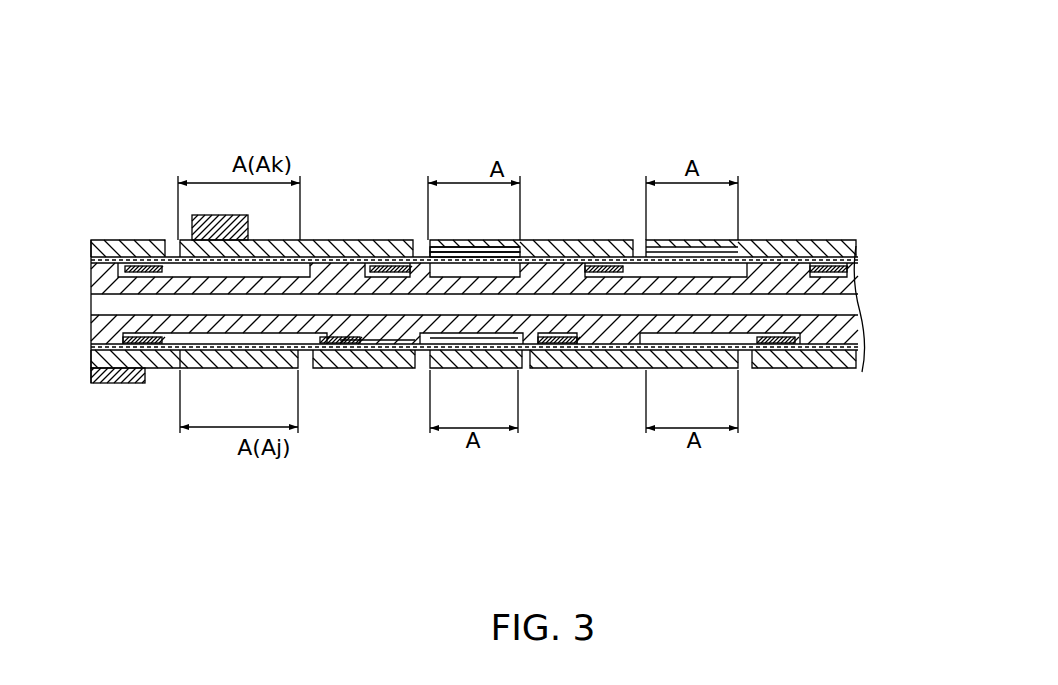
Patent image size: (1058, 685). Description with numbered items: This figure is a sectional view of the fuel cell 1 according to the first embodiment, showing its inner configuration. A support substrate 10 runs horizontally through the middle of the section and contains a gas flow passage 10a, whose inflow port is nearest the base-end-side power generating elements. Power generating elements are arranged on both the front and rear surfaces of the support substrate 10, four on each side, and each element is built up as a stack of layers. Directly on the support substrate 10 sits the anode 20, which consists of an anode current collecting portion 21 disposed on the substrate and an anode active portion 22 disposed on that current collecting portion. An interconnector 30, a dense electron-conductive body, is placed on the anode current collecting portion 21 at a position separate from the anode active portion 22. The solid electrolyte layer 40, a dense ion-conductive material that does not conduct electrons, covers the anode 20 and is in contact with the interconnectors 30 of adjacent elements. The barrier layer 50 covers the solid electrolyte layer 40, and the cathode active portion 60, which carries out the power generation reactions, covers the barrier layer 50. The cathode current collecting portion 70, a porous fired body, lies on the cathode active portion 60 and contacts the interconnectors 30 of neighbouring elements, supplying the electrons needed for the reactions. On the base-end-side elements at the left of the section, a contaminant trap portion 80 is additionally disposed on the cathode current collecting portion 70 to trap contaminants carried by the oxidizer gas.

The fuel cell 1 is at (57, 91).
The support substrate 10 is at (858, 340).
The gas flow passage 10a is at (474, 306).
The anode 20 is at (579, 153).
The anode current collecting portion 21 is at (438, 252).
The anode active portion 22 is at (452, 252).
The interconnector 30 is at (389, 240).
The solid electrolyte layer 40 is at (413, 370).
The barrier layer 50 is at (388, 370).
The cathode active portion 60 is at (292, 256).
The cathode current collecting portion 70 is at (338, 240).
The contaminant trap portion 80 is at (205, 215).